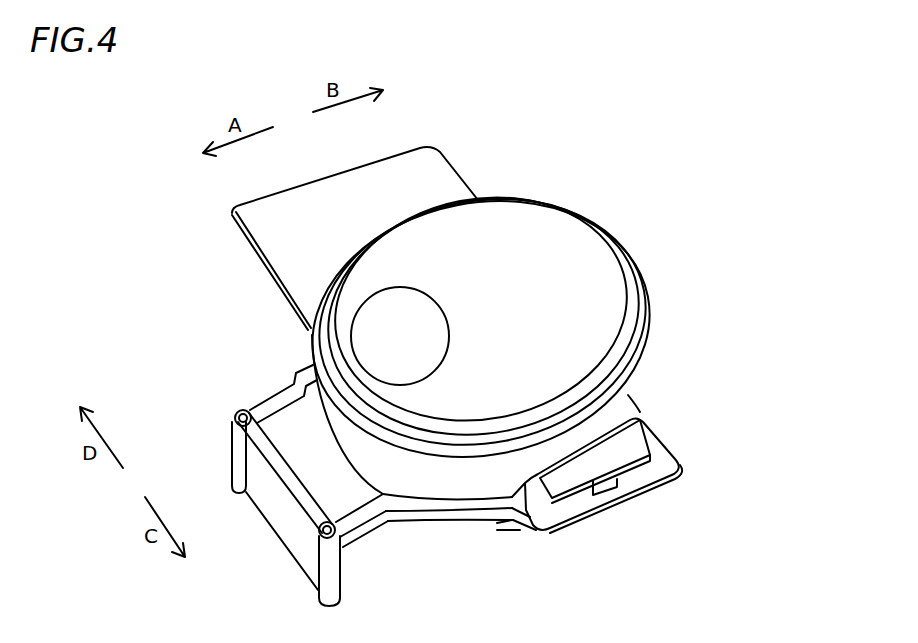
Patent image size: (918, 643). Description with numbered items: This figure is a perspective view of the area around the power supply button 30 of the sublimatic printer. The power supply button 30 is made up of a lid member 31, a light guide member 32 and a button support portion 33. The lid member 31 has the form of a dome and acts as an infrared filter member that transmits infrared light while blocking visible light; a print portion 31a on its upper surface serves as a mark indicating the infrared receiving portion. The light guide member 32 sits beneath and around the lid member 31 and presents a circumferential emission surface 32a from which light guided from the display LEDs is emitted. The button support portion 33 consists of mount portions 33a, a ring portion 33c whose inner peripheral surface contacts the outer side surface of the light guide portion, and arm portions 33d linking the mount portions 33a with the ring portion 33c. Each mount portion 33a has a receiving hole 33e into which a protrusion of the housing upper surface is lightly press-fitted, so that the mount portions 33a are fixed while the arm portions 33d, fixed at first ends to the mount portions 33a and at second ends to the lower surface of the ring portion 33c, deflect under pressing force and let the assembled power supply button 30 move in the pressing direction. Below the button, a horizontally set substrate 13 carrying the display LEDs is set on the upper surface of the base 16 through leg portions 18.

The power supply button 30 is at (693, 97).
The base 16 is at (280, 232).
The lid member 31 is at (505, 233).
The print portion 31a is at (397, 287).
The light guide member 32 is at (328, 318).
The circumferential emission surface 32a is at (606, 237).
The button support portion 33 is at (645, 362).
The mount portions 33a is at (243, 409).
The ring portion 33c is at (632, 400).
The arm portions 33d is at (497, 523).
The receiving holes 33e is at (237, 415).
The substrate 13 is at (617, 442).
The leg portions 18 is at (617, 482).